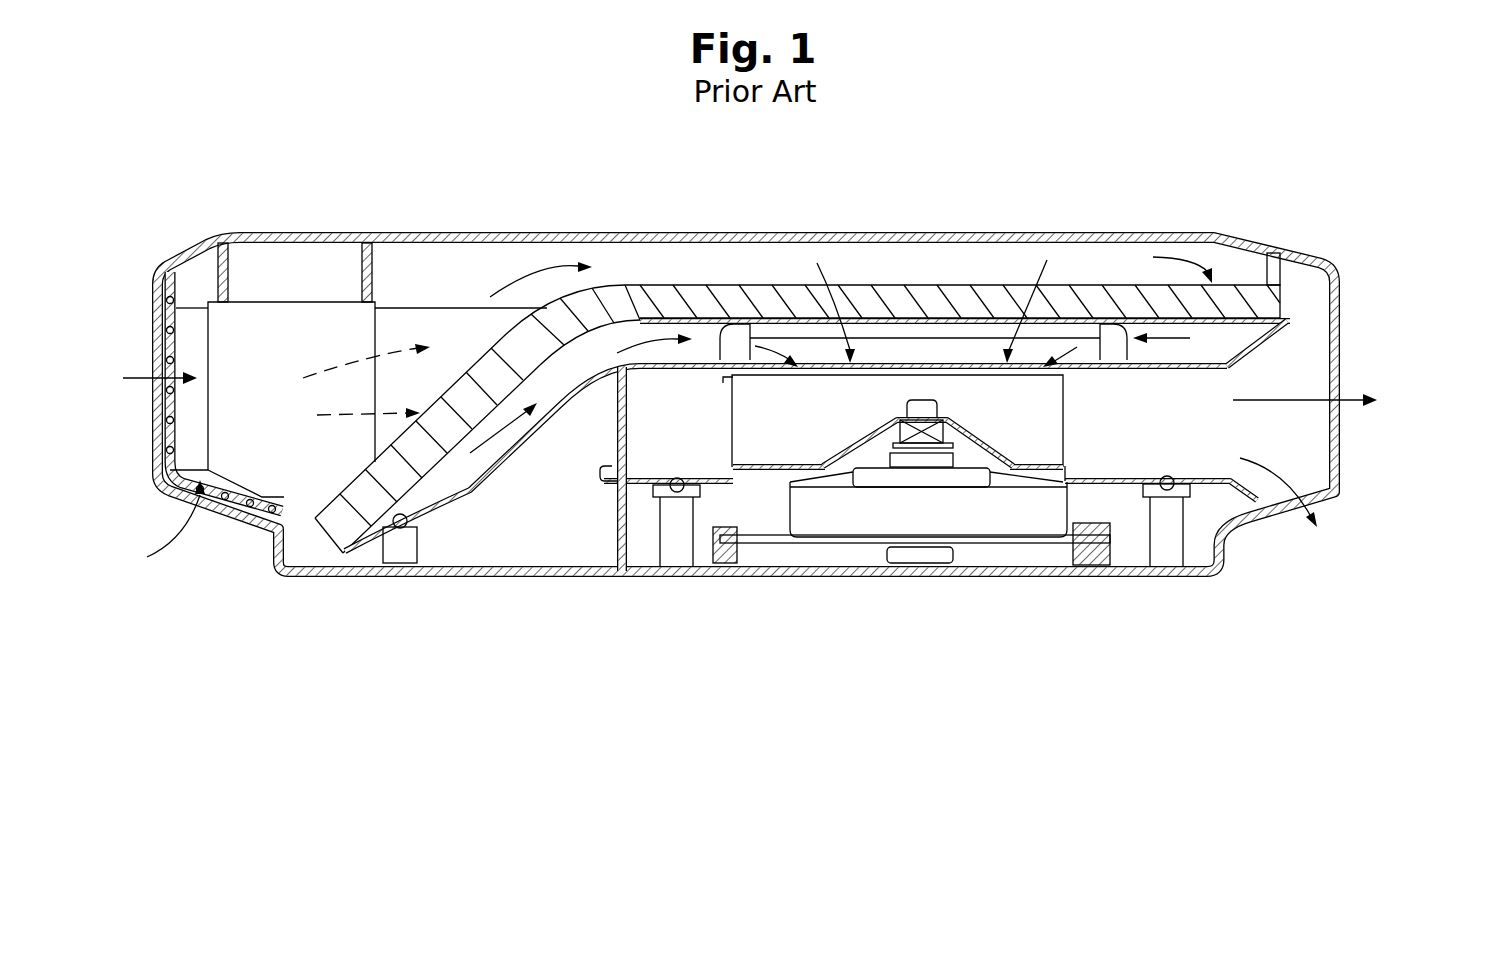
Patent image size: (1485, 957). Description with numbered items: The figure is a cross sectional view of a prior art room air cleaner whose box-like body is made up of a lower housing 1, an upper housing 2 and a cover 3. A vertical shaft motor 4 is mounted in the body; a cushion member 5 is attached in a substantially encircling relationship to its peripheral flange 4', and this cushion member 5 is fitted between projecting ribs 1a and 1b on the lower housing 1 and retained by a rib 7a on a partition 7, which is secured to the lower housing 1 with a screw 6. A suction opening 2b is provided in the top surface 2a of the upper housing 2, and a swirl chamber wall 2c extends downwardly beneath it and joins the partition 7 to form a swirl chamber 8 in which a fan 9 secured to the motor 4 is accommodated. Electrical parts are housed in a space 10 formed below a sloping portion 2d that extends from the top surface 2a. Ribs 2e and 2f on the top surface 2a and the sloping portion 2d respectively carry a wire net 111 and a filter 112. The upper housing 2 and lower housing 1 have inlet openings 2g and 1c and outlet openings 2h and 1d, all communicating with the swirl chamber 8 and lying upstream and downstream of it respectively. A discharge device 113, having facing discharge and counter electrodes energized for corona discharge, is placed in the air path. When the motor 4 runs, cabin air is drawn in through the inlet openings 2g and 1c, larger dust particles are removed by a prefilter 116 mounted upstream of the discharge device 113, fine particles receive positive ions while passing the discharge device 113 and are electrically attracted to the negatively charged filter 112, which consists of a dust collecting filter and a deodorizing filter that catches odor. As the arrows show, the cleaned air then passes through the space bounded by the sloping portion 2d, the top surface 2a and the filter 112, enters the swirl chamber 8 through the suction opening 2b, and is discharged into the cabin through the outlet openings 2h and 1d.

The lower housing 1 is at (482, 572).
The projecting rib 1a is at (1105, 520).
The projecting rib 1b is at (1080, 540).
The inlet opening 1c is at (220, 510).
The outlet opening 1d is at (1317, 507).
The upper housing 2 is at (148, 485).
The top surface 2a is at (1197, 360).
The suction opening 2b is at (1090, 355).
The swirl chamber wall 2c is at (605, 455).
The sloping portion 2d is at (478, 512).
The rib 2e is at (962, 330).
The rib 2f is at (540, 385).
The inlet opening 2g is at (153, 408).
The outlet opening 2h is at (1337, 420).
The cover 3 is at (493, 232).
The vertical shaft motor 4 is at (928, 565).
The peripheral flange 4' is at (915, 598).
The cushion member 5 is at (1075, 528).
The screw 6 is at (675, 483).
The partition 7 is at (712, 495).
The rib 7a is at (1102, 502).
The swirl chamber 8 is at (700, 397).
The fan 9 is at (880, 420).
The space 10 is at (527, 523).
The wire net 111 is at (1277, 330).
The filter 112 is at (775, 305).
The discharge device 113 is at (278, 320).
The prefilter 116 is at (182, 325).